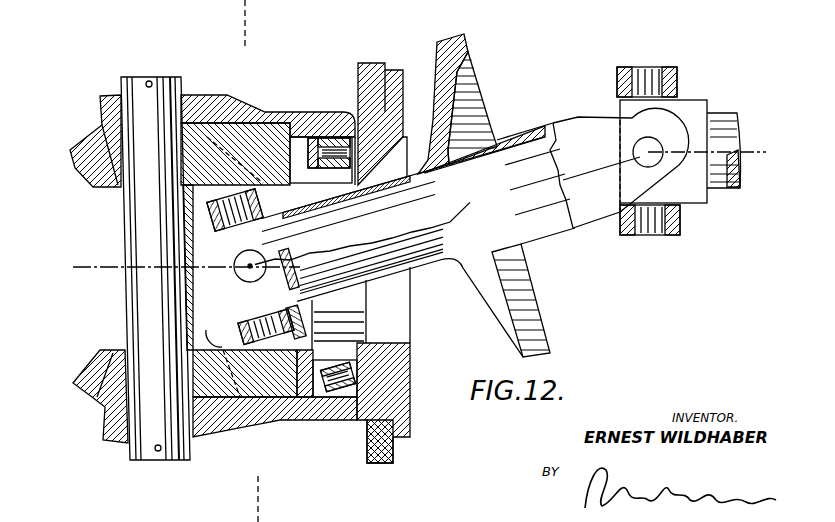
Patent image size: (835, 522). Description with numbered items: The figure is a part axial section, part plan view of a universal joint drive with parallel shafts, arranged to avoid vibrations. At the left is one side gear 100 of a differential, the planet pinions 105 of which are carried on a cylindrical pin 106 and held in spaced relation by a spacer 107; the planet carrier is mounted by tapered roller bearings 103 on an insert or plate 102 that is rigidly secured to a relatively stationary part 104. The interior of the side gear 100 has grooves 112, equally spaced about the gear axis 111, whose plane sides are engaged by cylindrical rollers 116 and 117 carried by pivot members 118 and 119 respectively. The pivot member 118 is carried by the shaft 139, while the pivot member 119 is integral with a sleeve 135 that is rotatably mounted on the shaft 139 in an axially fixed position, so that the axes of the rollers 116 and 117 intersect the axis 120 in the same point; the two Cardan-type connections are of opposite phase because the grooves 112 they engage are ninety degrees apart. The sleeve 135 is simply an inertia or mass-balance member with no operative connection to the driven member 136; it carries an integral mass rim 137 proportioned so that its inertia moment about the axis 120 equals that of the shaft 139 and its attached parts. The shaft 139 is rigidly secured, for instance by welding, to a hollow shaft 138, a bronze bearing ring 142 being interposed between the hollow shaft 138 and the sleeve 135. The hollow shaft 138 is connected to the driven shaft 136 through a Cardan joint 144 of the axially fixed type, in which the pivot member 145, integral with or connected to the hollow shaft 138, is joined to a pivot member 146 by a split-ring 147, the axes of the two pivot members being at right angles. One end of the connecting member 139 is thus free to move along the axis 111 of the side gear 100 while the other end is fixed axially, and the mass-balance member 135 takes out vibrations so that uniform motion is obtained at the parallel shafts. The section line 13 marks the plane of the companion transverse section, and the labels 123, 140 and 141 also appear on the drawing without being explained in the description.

The section line 13- 13 is at (245, 20).
The side gear 100 is at (262, 140).
The insert 102 is at (411, 420).
The tapered roller bearings 103 is at (357, 368).
The relatively stationary part 104 is at (370, 460).
The planet pinions 105 is at (85, 165).
The cylindrical pin 106 is at (138, 226).
The spacer 107 is at (128, 303).
The gear axis 111 is at (90, 267).
The grooves 112 is at (242, 323).
The cylindrical rollers 116 is at (274, 252).
The cylindrical rollers 117 is at (312, 313).
The pivot member 118 is at (290, 266).
The pivot member 119 is at (308, 168).
The axis 120 is at (570, 175).
The axis 123 is at (744, 152).
The sleeve 135 is at (412, 178).
The driven shaft 136 is at (720, 118).
The mass rim 137 is at (462, 50).
The hollow shaft 138 is at (552, 232).
The shaft 139 is at (458, 190).
The bearing 140 is at (240, 318).
The bearing 141 is at (227, 232).
The bronze bearing ring 142 is at (450, 160).
The Cardan joint 144 is at (668, 196).
The pivot member 145 is at (648, 152).
The pivot member 146 is at (645, 68).
The split-ring 147 is at (675, 86).